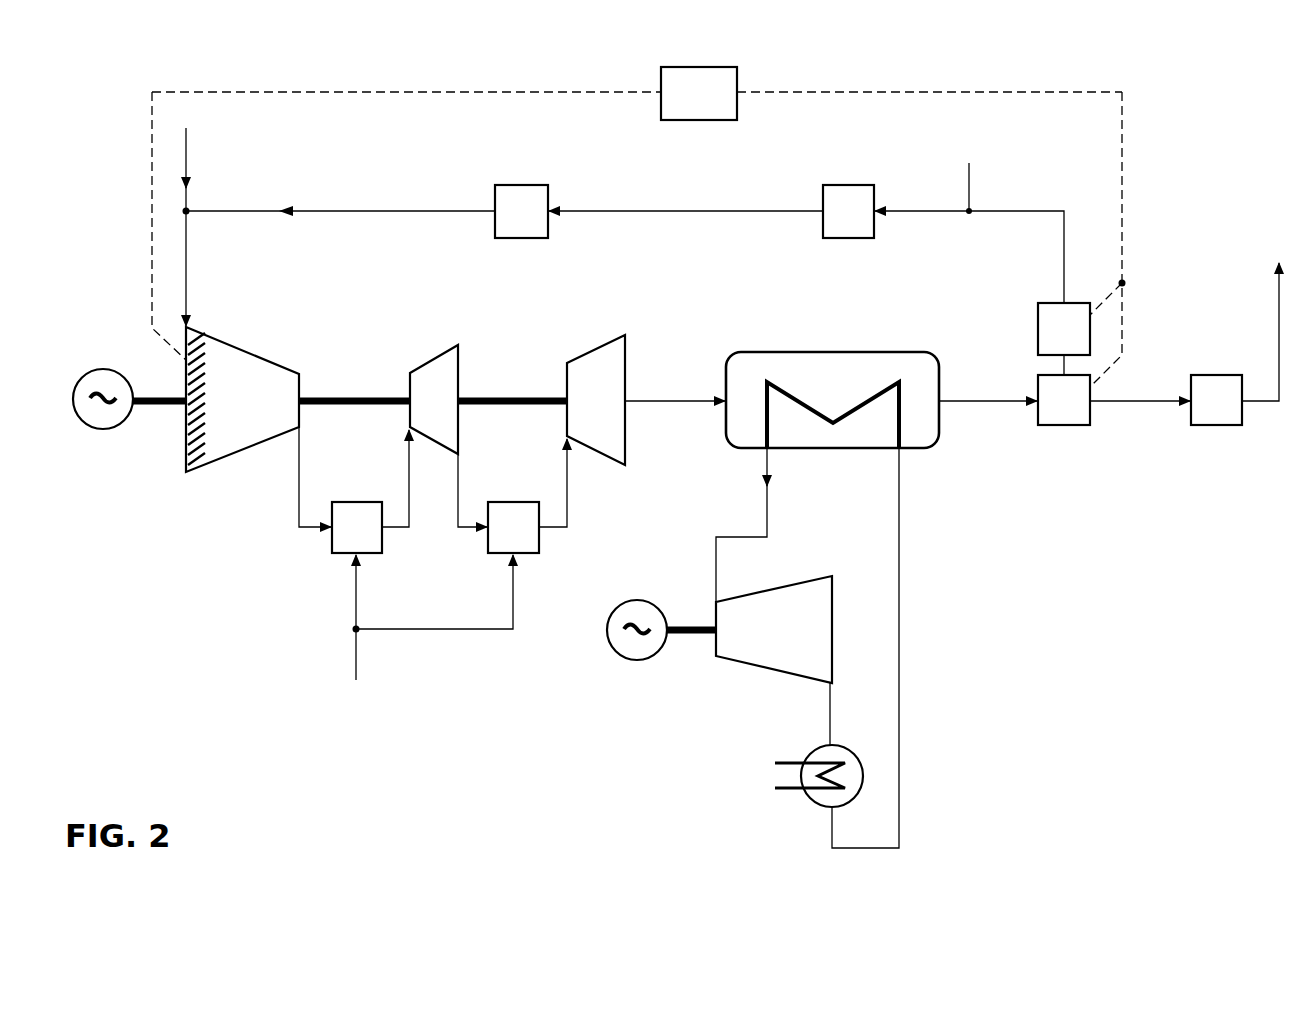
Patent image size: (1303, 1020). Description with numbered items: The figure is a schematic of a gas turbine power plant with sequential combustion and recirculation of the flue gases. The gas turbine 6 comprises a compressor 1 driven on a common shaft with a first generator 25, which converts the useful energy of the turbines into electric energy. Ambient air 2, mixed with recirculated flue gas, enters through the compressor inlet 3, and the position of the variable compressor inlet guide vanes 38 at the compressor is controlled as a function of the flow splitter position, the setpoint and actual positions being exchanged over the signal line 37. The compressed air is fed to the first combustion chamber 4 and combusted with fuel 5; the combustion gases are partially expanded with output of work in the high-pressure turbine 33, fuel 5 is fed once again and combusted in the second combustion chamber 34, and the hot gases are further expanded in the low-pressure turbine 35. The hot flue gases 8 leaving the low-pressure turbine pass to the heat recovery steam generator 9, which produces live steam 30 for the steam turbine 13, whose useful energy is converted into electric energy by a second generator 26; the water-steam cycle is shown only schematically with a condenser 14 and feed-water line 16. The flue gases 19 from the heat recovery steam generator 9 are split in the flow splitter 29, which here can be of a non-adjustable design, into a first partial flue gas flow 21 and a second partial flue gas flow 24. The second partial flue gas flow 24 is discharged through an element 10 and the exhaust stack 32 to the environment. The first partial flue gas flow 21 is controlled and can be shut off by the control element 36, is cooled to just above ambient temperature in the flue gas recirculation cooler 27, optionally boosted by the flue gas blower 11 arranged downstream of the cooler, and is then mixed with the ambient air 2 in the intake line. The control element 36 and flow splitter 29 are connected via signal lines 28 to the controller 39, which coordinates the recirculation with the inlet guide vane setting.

The compressor 1 is at (238, 415).
The ambient air 2 is at (186, 148).
The compressor inlet 3 is at (186, 281).
The first combustion chamber 4 is at (349, 540).
The fuel 5 is at (430, 637).
The gas turbine 6 is at (343, 359).
The hot flue gases 8 is at (669, 400).
The heat recovery steam generator 9 is at (824, 388).
The stack 10 is at (1201, 413).
The flue gas blower 11 is at (536, 225).
The steam turbine 13 is at (758, 642).
The condenser 14 is at (823, 797).
The feed-water line 16 is at (899, 729).
The flue gases 19 is at (987, 400).
The first partial flue gas flow 21 is at (969, 215).
The second partial flue gas flow 24 is at (1128, 402).
The first generator 25 is at (103, 415).
The second generator 26 is at (637, 645).
The flue gas recirculation cooler 27 is at (834, 225).
The signal line 28 is at (1122, 172).
The flow splitter 29 is at (1048, 413).
The live steam 30 is at (767, 510).
The exhaust stack 32 is at (1269, 314).
The high-pressure turbine 33 is at (418, 415).
The second combustion chamber 34 is at (498, 540).
The low-pressure turbine 35 is at (580, 415).
The control element 36 is at (1048, 342).
The signal line 37 is at (423, 92).
The variable compressor inlet guide vanes 38 is at (199, 467).
The controller 39 is at (683, 108).